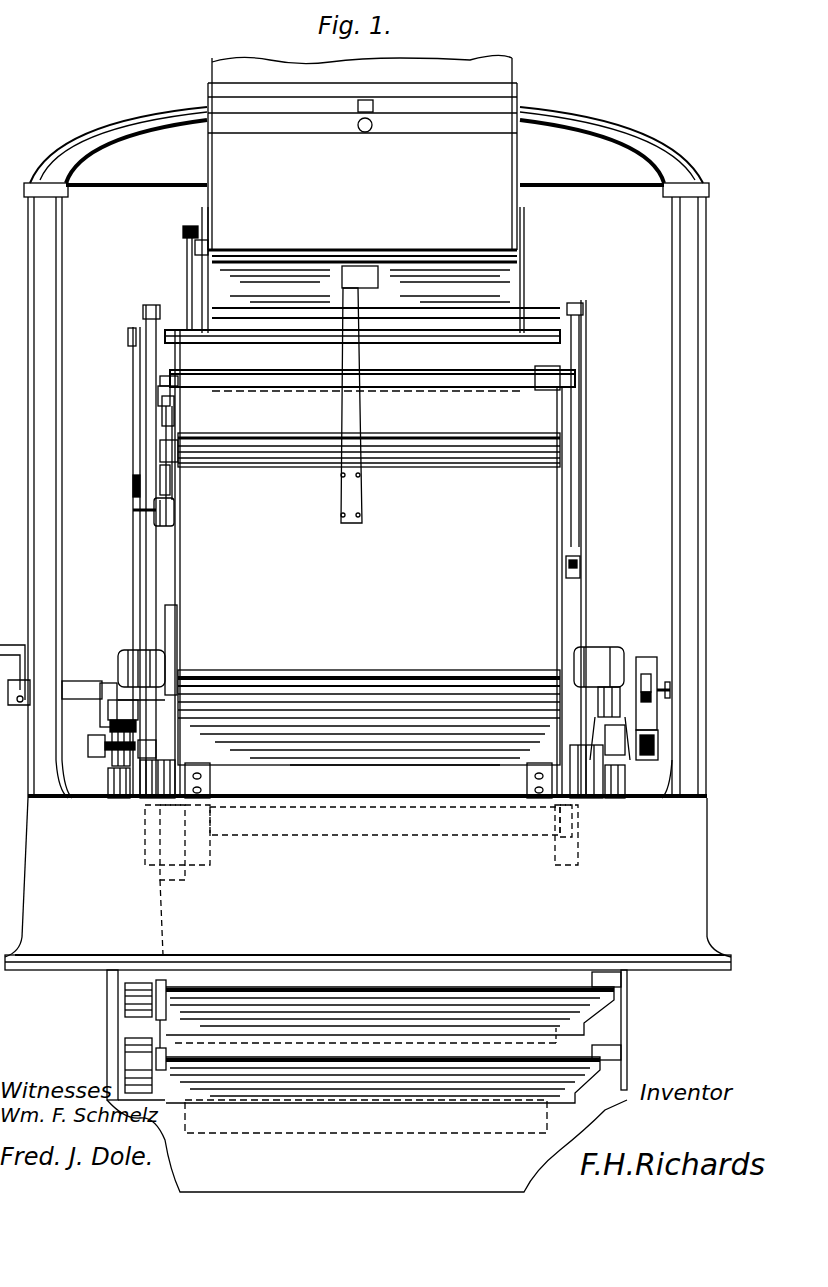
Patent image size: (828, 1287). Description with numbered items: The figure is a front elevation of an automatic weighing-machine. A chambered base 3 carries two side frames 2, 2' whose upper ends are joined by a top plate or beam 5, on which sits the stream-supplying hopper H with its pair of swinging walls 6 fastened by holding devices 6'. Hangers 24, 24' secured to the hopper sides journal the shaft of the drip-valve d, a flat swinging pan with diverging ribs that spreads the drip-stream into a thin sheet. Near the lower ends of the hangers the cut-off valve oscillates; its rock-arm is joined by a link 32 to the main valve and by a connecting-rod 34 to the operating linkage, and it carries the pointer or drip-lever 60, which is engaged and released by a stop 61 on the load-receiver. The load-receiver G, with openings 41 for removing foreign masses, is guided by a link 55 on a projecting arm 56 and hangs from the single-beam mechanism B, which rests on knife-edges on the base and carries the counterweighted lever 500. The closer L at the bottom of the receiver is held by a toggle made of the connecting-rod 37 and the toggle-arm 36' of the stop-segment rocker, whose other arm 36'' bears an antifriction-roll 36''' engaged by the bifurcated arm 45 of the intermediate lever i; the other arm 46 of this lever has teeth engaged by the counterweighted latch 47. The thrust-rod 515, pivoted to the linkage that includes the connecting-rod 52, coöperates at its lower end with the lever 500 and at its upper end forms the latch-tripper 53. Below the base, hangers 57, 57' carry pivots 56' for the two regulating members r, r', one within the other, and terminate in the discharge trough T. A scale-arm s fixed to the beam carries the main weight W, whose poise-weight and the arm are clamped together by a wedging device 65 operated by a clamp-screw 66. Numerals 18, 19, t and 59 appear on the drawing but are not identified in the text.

The side frame 2 is at (48, 490).
The side frame 2' is at (685, 490).
The chambered base 3 is at (368, 883).
The top plate or beam 5 is at (366, 146).
The swinging wall 6 is at (523, 264).
The holding device 6' is at (352, 129).
The hopper H is at (362, 152).
The head of rod 18 is at (191, 226).
The block 19 is at (200, 243).
The hanger 24 is at (357, 275).
The hanger 24' is at (389, 291).
The link 32 is at (186, 258).
The connecting-rod 34 is at (133, 452).
The toggle-arm 36' is at (129, 551).
The connecting-rod 37 is at (145, 374).
The lever arm 36'' is at (134, 397).
The antifriction-roll 36''' is at (196, 411).
The lever arm 45 is at (164, 424).
The intermediate lever i is at (172, 439).
The lever arm 46 is at (170, 484).
The latch 47 is at (174, 510).
The latch-tripper 53 is at (132, 497).
The openings 41 is at (290, 462).
The link 55 is at (362, 272).
The projecting arm 56 is at (230, 652).
The drip-valve d is at (310, 358).
The load-receiver G is at (380, 549).
The pointer or drip-lever 60 is at (572, 462).
The stop 61 is at (574, 560).
The connecting-rod 52 is at (160, 628).
The thrust-rod 515 is at (138, 622).
The arm t is at (85, 680).
The counterweighted lever 500 is at (195, 666).
The load-discharger or closer L is at (172, 754).
The wedging fastening device 65 is at (600, 722).
The main weight W is at (646, 656).
The scale-arm s is at (650, 678).
The clamp-screw 66 is at (670, 690).
The beam mechanism B is at (618, 752).
The hanger 57 is at (98, 1035).
The hanger 57' is at (629, 1030).
The pivot 56' is at (110, 1065).
The shaft 59 is at (168, 1010).
The regulating member r is at (390, 1006).
The regulating member r' is at (383, 1071).
The discharge hopper or trough T is at (367, 1146).